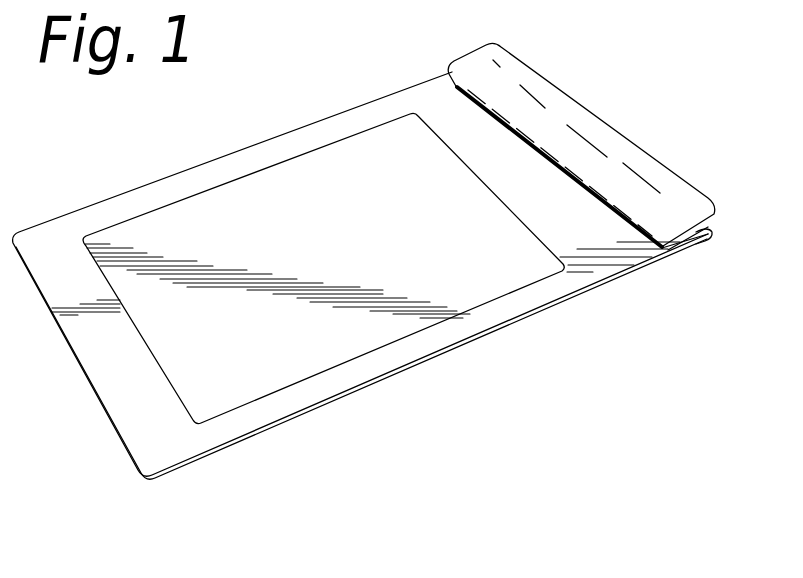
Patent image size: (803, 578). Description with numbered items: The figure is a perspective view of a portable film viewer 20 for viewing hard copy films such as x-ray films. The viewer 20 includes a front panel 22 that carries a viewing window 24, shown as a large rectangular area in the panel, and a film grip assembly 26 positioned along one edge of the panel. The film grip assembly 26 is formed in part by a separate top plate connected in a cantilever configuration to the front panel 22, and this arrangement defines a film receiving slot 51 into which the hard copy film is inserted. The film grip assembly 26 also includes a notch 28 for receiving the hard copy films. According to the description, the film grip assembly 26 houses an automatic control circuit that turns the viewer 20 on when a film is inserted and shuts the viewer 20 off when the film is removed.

The portable film viewer 20 is at (597, 68).
The front panel 22 is at (170, 458).
The viewing window 24 is at (392, 263).
The film grip assembly 26 is at (653, 220).
The notch 28 is at (704, 245).
The film receiving slot 51 is at (460, 95).